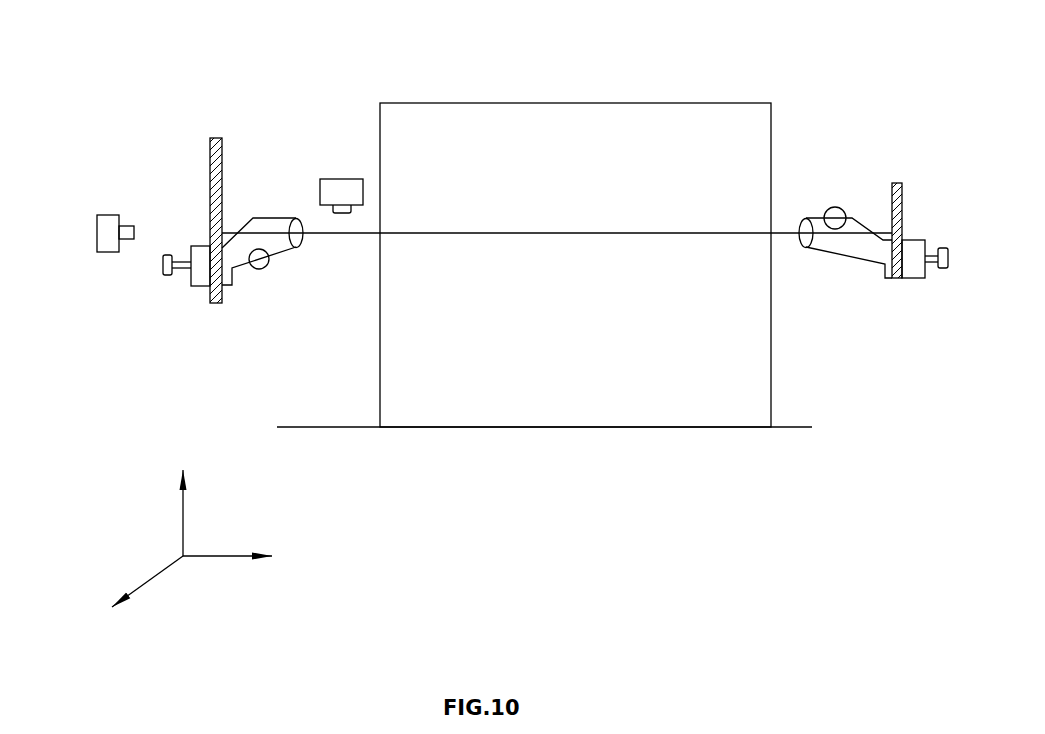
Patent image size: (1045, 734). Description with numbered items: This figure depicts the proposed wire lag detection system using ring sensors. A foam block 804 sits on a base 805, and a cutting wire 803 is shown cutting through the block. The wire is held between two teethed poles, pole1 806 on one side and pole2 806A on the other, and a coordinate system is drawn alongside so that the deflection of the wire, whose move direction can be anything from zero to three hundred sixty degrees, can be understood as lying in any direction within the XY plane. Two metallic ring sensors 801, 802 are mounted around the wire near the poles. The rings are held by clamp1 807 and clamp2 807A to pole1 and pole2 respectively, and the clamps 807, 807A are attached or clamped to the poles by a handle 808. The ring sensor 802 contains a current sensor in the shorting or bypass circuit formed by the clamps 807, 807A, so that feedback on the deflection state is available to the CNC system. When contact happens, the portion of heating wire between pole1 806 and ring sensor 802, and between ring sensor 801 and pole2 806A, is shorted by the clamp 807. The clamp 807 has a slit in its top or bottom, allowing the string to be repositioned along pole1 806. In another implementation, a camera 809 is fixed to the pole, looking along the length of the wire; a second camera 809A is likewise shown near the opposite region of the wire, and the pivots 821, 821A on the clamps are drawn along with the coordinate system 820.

The metallic ring sensor 801 is at (805, 212).
The ring sensor 802 is at (293, 212).
The cutting wire 803 is at (849, 250).
The foam block 804 is at (498, 97).
The base 805 is at (310, 433).
The pole1 806 is at (201, 138).
The pole2 806A is at (897, 181).
The clamp1 807 is at (187, 279).
The clamp2 807A is at (829, 254).
The handle 808 is at (160, 272).
The camera 809 is at (96, 204).
The second sensor 809A is at (336, 168).
The coordinate system 820 is at (165, 542).
The first pivot 821 is at (260, 270).
The second pivot 821A is at (835, 206).